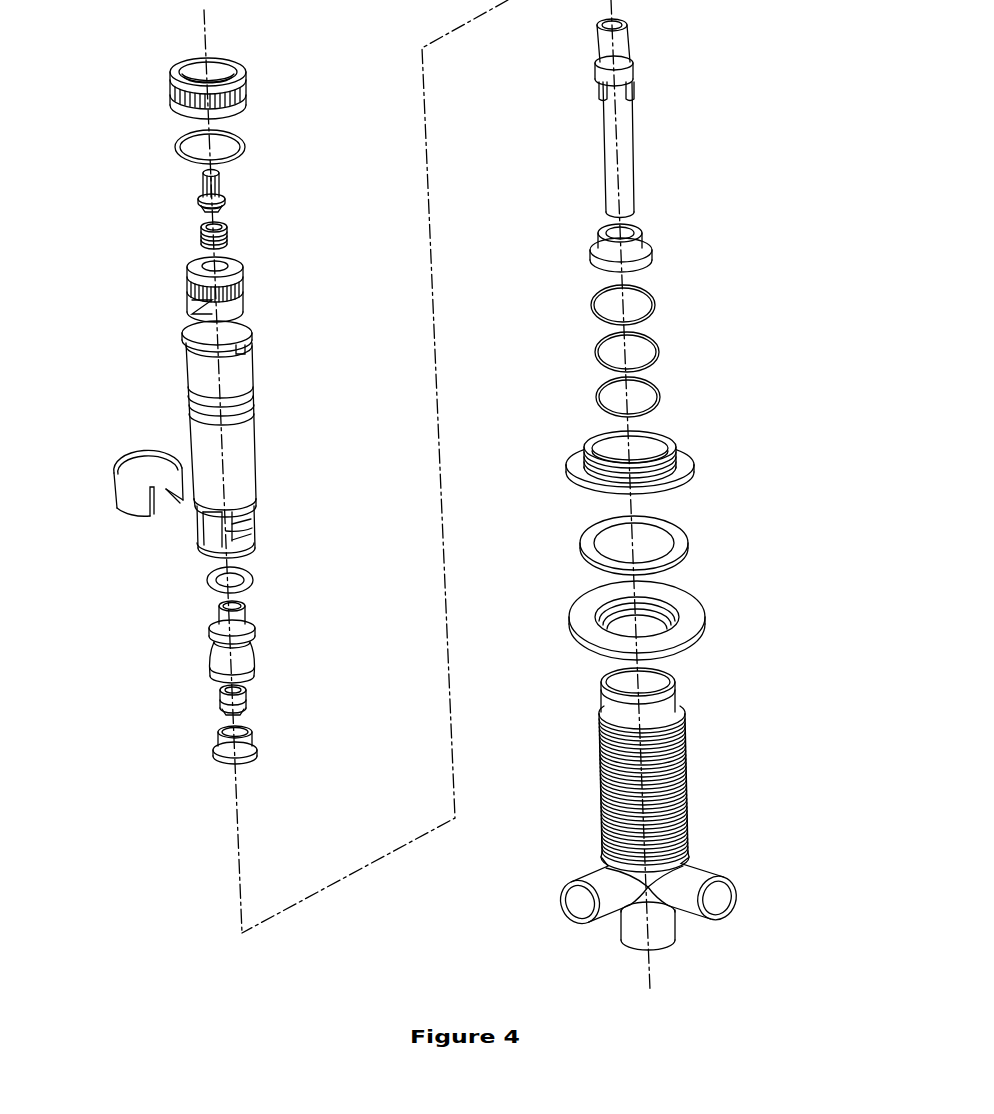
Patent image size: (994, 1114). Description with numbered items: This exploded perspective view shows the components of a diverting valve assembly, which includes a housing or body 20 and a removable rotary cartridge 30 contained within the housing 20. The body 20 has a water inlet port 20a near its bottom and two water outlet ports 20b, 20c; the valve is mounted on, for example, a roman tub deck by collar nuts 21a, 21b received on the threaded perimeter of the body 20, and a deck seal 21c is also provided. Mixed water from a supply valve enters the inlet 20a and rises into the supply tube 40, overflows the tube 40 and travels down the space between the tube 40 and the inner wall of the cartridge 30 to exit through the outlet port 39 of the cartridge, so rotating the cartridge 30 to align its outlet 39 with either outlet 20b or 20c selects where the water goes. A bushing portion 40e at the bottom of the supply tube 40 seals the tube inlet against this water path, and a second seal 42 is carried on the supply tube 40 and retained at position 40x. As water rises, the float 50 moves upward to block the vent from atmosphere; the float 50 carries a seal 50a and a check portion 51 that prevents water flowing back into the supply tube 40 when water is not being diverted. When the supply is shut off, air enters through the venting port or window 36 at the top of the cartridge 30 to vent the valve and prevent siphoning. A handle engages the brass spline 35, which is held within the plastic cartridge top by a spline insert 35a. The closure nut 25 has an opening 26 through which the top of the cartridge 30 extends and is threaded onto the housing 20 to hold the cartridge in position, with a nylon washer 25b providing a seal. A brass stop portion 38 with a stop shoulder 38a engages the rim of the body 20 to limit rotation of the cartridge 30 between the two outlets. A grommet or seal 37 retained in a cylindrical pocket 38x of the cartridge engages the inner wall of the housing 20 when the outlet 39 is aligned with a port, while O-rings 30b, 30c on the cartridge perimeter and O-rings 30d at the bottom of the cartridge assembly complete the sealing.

The housing 20 is at (647, 827).
The water inlet port 20a is at (640, 948).
The water outlet port 20b is at (578, 900).
The water outlet port 20c is at (720, 893).
The collar nut 21a is at (690, 452).
The collar nut 21b is at (700, 605).
The deck seal 21c is at (688, 537).
The closure nut 25 is at (168, 90).
The nylon washer 25b is at (176, 150).
The opening 26 is at (224, 63).
The rotary cartridge 30 is at (221, 456).
The O-ring 30b is at (190, 388).
The O-ring 30c is at (190, 408).
The O-rings 30d is at (668, 280).
The spline 35 is at (226, 185).
The spline insert 35a is at (228, 232).
The venting port 36 is at (190, 304).
The grommet 37 is at (135, 498).
The stop portion 38 is at (255, 322).
The stop shoulder 38a is at (248, 350).
The cylindrical pocket 38x is at (207, 527).
The outlet port 39 is at (248, 528).
The supply tube 40 is at (607, 116).
The bushing portion 40e is at (645, 240).
The seal retaining position 40x is at (600, 93).
The second seal 42 is at (255, 742).
The float 50 is at (255, 628).
The seal 50a is at (255, 576).
The check portion 51 is at (248, 697).